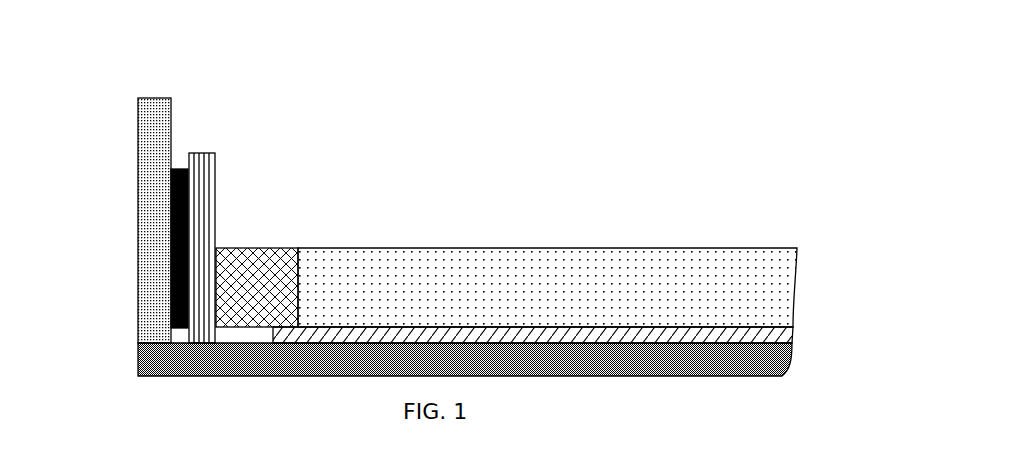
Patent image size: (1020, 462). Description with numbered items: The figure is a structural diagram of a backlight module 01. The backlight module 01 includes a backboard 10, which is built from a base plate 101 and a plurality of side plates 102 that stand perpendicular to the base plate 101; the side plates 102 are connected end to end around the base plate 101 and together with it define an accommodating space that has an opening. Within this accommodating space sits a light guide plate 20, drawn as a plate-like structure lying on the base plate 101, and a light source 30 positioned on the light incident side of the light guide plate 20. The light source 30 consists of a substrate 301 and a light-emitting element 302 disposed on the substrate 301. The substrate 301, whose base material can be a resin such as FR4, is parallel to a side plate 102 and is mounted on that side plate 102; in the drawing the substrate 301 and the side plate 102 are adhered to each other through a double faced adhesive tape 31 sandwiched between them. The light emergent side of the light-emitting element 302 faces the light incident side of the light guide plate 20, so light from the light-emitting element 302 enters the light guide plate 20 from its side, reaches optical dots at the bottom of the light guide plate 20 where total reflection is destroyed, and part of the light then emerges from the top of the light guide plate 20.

The backlight module 01 is at (115, 29).
The backboard 10 is at (53, 273).
The base plate 101 is at (152, 363).
The side plate 102 is at (152, 292).
The light guide plate 20 is at (773, 289).
The light source 30 is at (272, 130).
The double faced adhesive tape 31 is at (197, 153).
The substrate 301 is at (207, 199).
The light-emitting element 302 is at (235, 257).